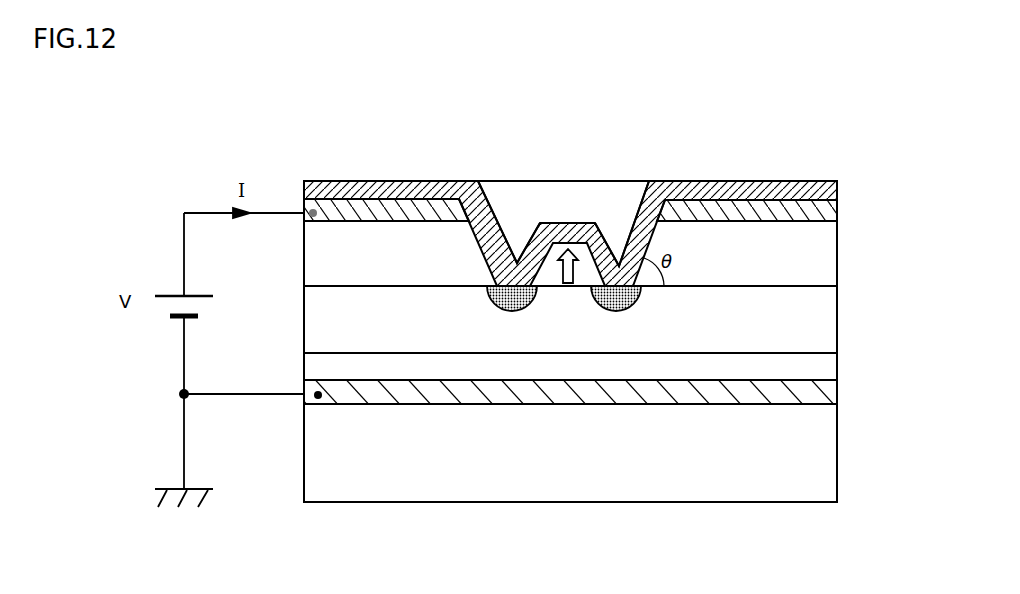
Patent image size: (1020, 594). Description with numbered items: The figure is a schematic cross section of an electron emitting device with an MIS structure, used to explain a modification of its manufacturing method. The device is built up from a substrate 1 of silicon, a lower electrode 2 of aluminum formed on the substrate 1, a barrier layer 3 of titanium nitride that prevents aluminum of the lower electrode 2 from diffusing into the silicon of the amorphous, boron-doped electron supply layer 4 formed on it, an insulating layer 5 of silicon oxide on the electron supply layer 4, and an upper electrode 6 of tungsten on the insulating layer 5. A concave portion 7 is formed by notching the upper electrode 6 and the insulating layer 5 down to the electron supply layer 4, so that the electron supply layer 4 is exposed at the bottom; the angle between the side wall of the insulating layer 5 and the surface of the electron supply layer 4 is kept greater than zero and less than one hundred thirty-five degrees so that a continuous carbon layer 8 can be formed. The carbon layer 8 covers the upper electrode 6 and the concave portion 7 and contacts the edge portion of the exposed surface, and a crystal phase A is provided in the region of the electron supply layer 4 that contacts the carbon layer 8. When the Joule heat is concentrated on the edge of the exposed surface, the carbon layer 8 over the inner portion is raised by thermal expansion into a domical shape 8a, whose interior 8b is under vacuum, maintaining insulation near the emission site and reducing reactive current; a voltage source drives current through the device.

The substrate 1 is at (822, 456).
The lower electrode 2 is at (822, 392).
The barrier layer 3 is at (822, 366).
The electron supply layer 4 is at (826, 319).
The insulating layer 5 is at (827, 255).
The upper electrode 6 is at (838, 209).
The concave portion 7 is at (630, 198).
The carbon layer 8 is at (838, 184).
The domical shape 8a is at (522, 260).
The interior 8b is at (550, 263).
The crystal phase A is at (617, 308).